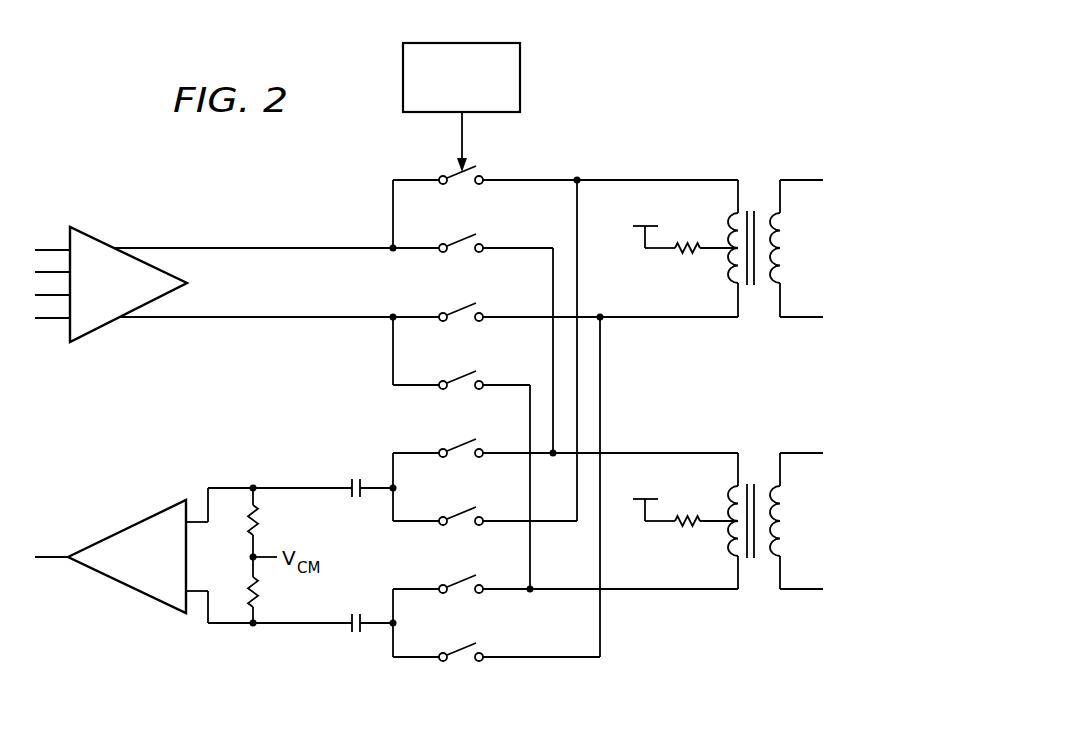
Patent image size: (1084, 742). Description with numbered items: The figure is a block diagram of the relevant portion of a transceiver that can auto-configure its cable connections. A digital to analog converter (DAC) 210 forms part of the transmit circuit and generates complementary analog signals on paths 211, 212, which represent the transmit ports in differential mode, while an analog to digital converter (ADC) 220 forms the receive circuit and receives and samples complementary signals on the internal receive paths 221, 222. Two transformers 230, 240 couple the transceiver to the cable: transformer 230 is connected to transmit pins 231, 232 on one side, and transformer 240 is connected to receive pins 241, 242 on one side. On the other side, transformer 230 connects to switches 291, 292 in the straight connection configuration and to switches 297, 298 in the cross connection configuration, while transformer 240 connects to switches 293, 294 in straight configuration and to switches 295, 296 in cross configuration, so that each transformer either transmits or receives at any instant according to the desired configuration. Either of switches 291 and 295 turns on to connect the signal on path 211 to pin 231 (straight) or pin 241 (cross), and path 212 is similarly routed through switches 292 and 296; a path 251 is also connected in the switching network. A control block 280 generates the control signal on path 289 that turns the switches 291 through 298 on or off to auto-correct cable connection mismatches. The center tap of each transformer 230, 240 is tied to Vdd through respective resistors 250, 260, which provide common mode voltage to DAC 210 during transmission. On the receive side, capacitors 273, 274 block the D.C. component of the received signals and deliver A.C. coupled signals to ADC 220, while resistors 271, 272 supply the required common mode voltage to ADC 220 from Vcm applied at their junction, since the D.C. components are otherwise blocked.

The digital to analog converter (DAC) 210 is at (88, 233).
The path 211 is at (230, 247).
The path 212 is at (230, 319).
The analog to digital converter (ADC) 220 is at (123, 583).
The path 221 is at (228, 486).
The path 222 is at (228, 625).
The transformer 230 is at (773, 238).
The path 231 is at (800, 180).
The path 232 is at (800, 317).
The transformer 240 is at (773, 530).
The path 241 is at (800, 453).
The path 242 is at (800, 589).
The resistor 250 is at (685, 252).
The path 251 is at (577, 225).
The resistor 260 is at (685, 527).
The resistor 271 is at (262, 525).
The resistor 272 is at (262, 592).
The capacitor 273 is at (352, 478).
The capacitor 274 is at (352, 634).
The control block 280 is at (403, 76).
The path 289 is at (467, 133).
The switch 291 is at (455, 172).
The switch 292 is at (456, 311).
The switch 293 is at (456, 447).
The switch 294 is at (456, 583).
The switch 295 is at (456, 242).
The switch 296 is at (456, 379).
The switch 297 is at (456, 515).
The switch 298 is at (456, 651).